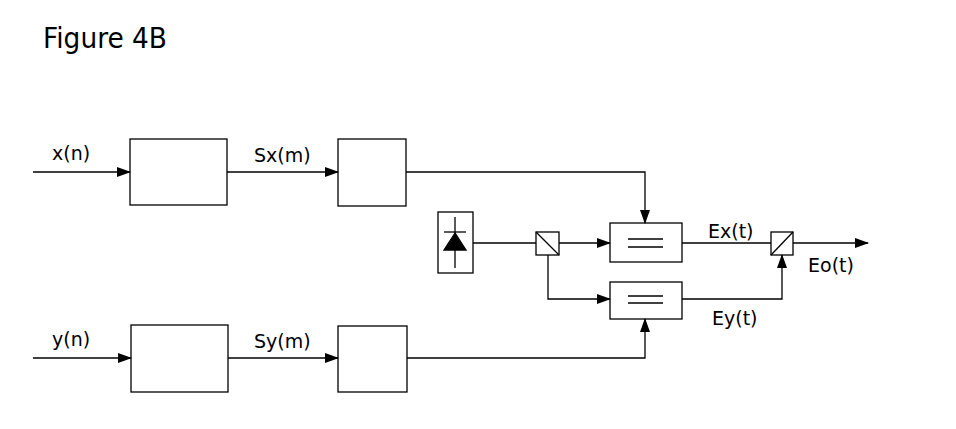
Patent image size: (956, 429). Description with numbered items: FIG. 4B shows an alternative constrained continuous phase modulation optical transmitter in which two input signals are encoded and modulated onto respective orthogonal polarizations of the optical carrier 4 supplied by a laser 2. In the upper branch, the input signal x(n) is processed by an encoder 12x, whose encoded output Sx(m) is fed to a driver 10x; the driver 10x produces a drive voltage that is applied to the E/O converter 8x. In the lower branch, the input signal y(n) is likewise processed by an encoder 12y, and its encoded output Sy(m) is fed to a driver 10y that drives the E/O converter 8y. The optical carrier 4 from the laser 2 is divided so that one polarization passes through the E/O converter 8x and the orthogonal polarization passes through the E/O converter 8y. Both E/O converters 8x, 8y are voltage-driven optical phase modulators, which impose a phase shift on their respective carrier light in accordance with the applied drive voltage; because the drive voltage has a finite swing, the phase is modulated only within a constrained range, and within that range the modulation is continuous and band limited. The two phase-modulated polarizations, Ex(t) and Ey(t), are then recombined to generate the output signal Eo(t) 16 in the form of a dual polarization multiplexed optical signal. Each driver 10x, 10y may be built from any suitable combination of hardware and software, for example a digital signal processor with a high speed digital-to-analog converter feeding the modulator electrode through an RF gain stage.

The encoder 12x is at (222, 139).
The encoder 12y is at (183, 325).
The driver 10x is at (396, 139).
The driver 10y is at (380, 326).
The laser 2 is at (438, 226).
The optical carrier 4 is at (503, 243).
The E/O converter 8x is at (668, 223).
The E/O converter 8y is at (663, 319).
The output signal Eo(t) 16 is at (818, 243).